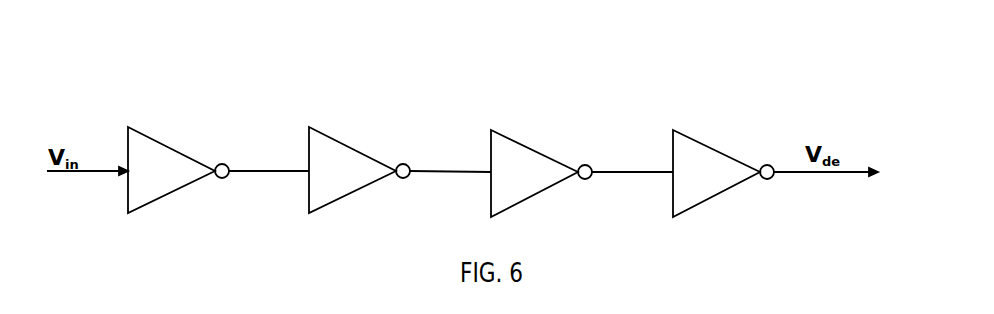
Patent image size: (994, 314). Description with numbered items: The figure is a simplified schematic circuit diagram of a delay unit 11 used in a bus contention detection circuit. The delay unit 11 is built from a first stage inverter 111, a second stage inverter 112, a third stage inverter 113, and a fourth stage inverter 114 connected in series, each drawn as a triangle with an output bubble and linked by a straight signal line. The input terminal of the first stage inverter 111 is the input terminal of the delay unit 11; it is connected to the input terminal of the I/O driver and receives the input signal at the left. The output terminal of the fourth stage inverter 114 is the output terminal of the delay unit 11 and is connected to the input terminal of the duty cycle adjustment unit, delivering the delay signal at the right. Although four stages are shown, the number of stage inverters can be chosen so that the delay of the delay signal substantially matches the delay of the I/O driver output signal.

The delay unit 11 is at (143, 70).
The first stage inverter 111 is at (188, 155).
The second stage inverter 112 is at (352, 147).
The third stage inverter 113 is at (550, 157).
The fourth stage inverter 114 is at (713, 148).